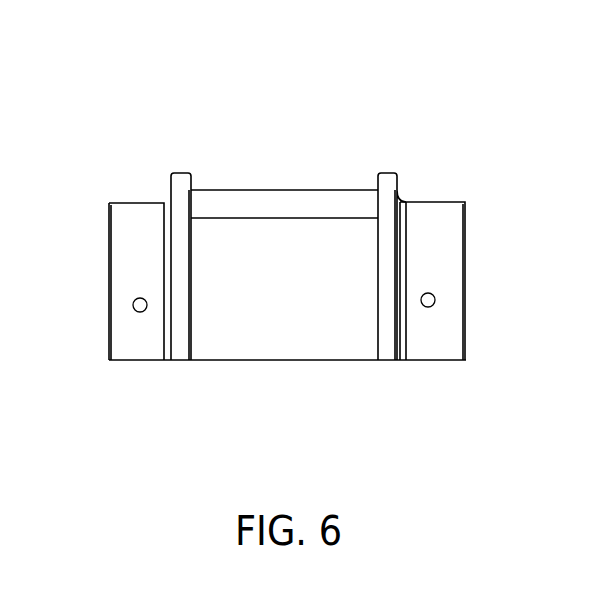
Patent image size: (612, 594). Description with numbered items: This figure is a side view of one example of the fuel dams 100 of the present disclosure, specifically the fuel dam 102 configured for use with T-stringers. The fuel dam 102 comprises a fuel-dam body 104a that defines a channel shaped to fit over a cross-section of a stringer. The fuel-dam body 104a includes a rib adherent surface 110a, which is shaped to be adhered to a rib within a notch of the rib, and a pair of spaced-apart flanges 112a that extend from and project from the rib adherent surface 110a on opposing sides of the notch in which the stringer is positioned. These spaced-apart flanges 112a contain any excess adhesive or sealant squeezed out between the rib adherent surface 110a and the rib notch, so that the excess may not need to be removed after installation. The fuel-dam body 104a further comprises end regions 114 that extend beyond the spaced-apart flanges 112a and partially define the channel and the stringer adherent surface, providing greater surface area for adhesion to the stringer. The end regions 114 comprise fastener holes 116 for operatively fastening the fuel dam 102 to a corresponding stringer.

The fuel dam 100 is at (232, 44).
The fuel dam for use with T-stringers 102 is at (297, 111).
The fuel-dam body 104a is at (298, 189).
The rib adherent surface 110a is at (283, 310).
The spaced-apart flanges 112a is at (186, 173).
The end regions 114 is at (140, 202).
The fastener holes 116 is at (140, 312).